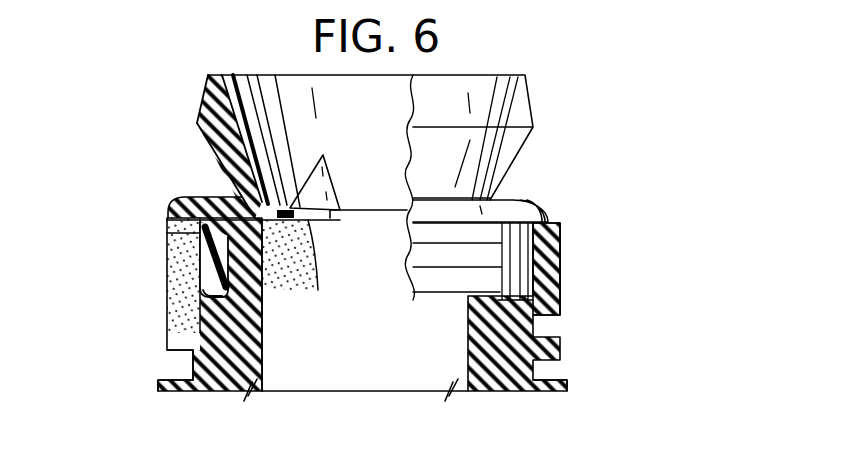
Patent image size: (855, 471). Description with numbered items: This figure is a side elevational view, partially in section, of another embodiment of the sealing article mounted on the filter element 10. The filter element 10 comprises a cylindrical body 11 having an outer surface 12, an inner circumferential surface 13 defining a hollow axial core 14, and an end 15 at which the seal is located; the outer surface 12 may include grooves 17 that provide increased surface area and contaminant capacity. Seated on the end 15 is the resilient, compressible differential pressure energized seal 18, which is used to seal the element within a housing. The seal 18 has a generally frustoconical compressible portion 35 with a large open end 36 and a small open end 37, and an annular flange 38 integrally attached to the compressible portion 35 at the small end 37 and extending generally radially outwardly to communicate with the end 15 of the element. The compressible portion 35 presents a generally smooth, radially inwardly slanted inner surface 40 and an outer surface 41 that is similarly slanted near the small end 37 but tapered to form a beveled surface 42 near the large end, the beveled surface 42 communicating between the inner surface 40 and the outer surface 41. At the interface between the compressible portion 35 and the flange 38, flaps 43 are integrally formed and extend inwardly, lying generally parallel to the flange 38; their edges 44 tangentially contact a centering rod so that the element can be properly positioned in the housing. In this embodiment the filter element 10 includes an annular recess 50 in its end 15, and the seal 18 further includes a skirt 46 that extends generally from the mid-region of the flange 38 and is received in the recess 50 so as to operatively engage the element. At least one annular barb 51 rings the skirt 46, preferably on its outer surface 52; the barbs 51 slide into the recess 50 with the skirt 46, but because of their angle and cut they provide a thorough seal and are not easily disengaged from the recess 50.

The filter element 10 is at (575, 326).
The body 11 is at (570, 387).
The outer surface 12 is at (167, 350).
The inner circumferential surface 13 is at (262, 358).
The hollow axial core 14 is at (400, 370).
The end 15 is at (563, 257).
The grooves 17 is at (193, 363).
The differential pressure energized seal 18 is at (540, 100).
The compressible portion 35 is at (207, 90).
The large open end 36 is at (240, 75).
The small open end 37 is at (322, 223).
The annular flange 38 is at (547, 210).
The inner surface 40 is at (238, 124).
The outer surface 41 is at (223, 170).
The beveled surface 42 is at (528, 90).
The flaps 43 is at (284, 204).
The edges 44 is at (308, 224).
The skirt 46 is at (217, 280).
The annular recess 50 is at (200, 290).
The annular barb 51 is at (203, 281).
The outer surface 52 is at (197, 230).